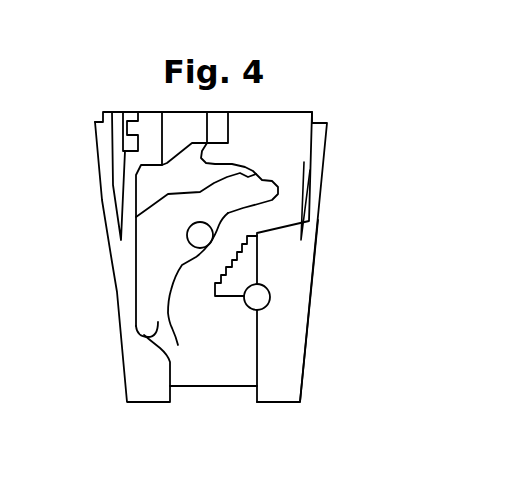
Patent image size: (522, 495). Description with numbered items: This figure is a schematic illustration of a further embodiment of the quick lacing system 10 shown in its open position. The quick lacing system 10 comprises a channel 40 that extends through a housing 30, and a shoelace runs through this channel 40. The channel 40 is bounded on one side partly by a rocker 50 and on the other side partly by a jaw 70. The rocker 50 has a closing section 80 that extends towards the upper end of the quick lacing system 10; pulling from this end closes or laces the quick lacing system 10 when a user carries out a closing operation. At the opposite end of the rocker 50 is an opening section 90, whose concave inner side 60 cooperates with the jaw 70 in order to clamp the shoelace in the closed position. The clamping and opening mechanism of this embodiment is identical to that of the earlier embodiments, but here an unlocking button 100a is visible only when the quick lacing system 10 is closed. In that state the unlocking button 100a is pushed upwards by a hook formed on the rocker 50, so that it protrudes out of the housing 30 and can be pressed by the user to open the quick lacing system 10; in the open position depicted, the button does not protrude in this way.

The quick lacing system 10 is at (91, 111).
The unlocking button 100a is at (150, 120).
The housing 30 is at (129, 345).
The rocker 50 is at (160, 238).
The closing section 80 is at (264, 181).
The concave inner side 60 is at (180, 280).
The opening section 90 is at (155, 315).
The jaw 70 is at (244, 269).
The channel 40 is at (230, 364).